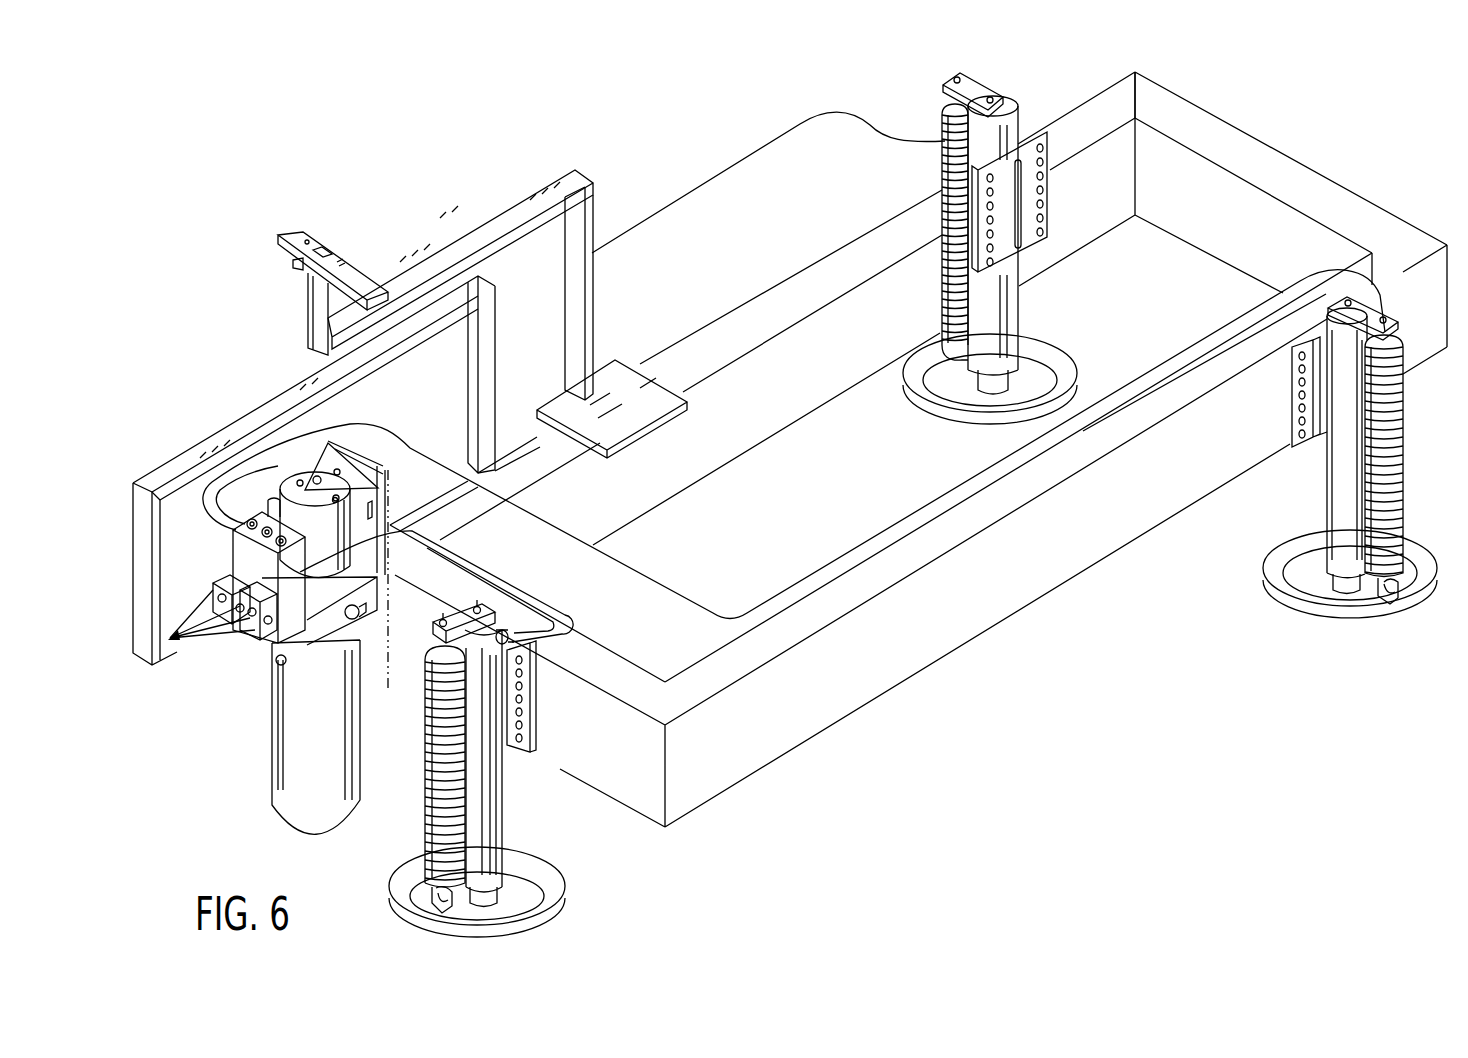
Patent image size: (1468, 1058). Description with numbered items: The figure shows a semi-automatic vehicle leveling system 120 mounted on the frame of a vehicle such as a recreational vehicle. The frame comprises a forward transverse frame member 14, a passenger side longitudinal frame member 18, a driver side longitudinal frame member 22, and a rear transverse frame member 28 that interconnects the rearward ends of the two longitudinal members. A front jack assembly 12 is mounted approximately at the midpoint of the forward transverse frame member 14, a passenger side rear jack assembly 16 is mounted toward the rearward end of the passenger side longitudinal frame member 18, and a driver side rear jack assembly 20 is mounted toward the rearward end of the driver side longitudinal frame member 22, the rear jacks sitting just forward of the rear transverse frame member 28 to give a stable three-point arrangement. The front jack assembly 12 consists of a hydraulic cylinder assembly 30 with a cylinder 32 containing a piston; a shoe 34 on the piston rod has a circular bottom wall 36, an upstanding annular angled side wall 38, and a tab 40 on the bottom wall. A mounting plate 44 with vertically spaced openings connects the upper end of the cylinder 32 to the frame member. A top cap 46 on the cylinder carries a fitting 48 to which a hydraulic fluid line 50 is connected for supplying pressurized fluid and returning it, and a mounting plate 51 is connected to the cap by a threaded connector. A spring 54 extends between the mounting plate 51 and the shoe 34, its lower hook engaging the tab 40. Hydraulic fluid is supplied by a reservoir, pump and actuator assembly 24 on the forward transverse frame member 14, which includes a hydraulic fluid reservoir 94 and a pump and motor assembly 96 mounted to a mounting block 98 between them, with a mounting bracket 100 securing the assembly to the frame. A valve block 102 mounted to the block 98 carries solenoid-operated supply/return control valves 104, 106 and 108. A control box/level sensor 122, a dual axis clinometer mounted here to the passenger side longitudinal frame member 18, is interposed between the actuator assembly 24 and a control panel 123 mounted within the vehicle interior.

The front jack assembly 12 is at (474, 756).
The forward transverse frame member 14 is at (627, 662).
The passenger side rear jack assembly 16 is at (1030, 83).
The passenger side longitudinal frame member 18 is at (681, 349).
The driver side rear jack assembly 20 is at (1414, 473).
The driver side longitudinal frame member 22 is at (1009, 616).
The reservoir, pump and actuator assembly 24 is at (273, 612).
The rear transverse frame member 28 is at (1249, 132).
The hydraulic cylinder assembly 30 is at (512, 780).
The cylinder 32 is at (505, 816).
The shoe 34 is at (512, 897).
The circular bottom wall 36 is at (505, 913).
The upstanding annular angled side wall 38 is at (555, 905).
The tab 40 is at (437, 897).
The mounting plate 44 is at (533, 696).
The top cap 46 is at (490, 597).
The fitting 48 is at (514, 640).
The hydraulic fluid line 50 is at (507, 557).
The mounting plate 51 is at (447, 617).
The spring 54 is at (422, 782).
The hydraulic fluid reservoir 94 is at (272, 788).
The pump and motor assembly 96 is at (282, 487).
The mounting block 98 is at (333, 633).
The mounting bracket 100 is at (357, 453).
The valve block 102 is at (232, 560).
The supply/return control valve 104 is at (262, 625).
The supply/return control valve 106 is at (257, 640).
The supply/return control valve 108 is at (213, 588).
The semi-automatic vehicle leveling system 120 is at (680, 145).
The control box/level sensor 122 is at (648, 437).
The control panel 123 is at (400, 222).